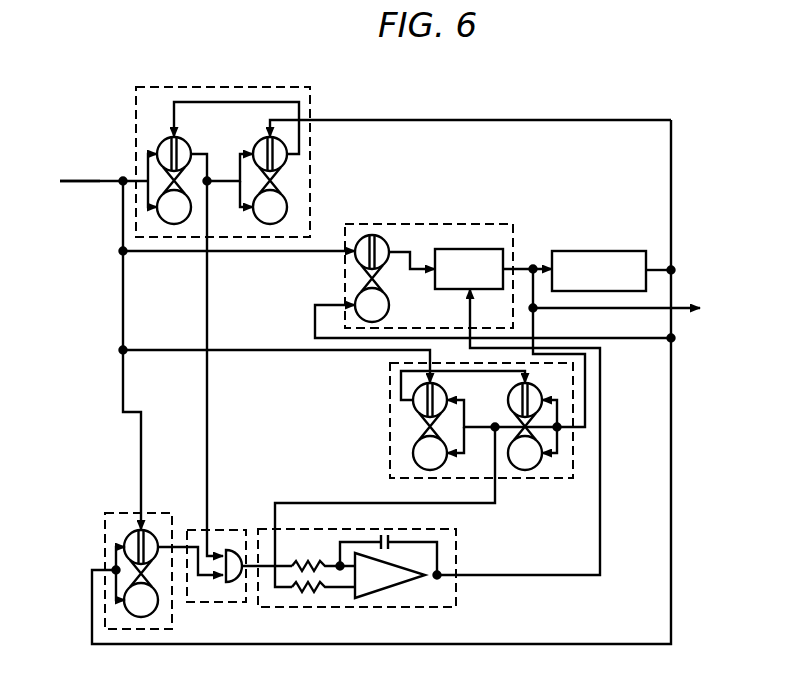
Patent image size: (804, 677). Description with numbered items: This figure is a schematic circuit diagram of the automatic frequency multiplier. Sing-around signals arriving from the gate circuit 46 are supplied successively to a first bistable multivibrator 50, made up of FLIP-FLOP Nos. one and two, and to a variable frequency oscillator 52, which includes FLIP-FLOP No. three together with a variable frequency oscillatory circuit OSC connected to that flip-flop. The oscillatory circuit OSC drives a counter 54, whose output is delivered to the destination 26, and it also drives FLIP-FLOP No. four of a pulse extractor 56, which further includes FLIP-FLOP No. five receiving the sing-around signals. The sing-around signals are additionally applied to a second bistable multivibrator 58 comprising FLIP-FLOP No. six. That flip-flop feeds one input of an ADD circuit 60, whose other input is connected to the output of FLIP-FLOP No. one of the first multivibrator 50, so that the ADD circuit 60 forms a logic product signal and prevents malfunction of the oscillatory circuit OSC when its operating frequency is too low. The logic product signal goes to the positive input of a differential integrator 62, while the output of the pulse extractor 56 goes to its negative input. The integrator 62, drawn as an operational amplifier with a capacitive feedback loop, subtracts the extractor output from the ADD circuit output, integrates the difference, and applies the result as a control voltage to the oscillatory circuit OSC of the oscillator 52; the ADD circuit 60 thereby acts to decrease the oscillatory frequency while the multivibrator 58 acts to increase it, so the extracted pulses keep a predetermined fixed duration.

The gate circuit 46 is at (62, 163).
The output destination 26 is at (644, 309).
The first bistable multivibrator 50 is at (227, 87).
The variable frequency oscillator 52 is at (457, 224).
The counter 54 is at (594, 251).
The pulse extractor 56 is at (390, 387).
The second bistable multivibrator 58 is at (120, 512).
The ADD circuit 60 is at (225, 530).
The differential integrator 62 is at (457, 555).